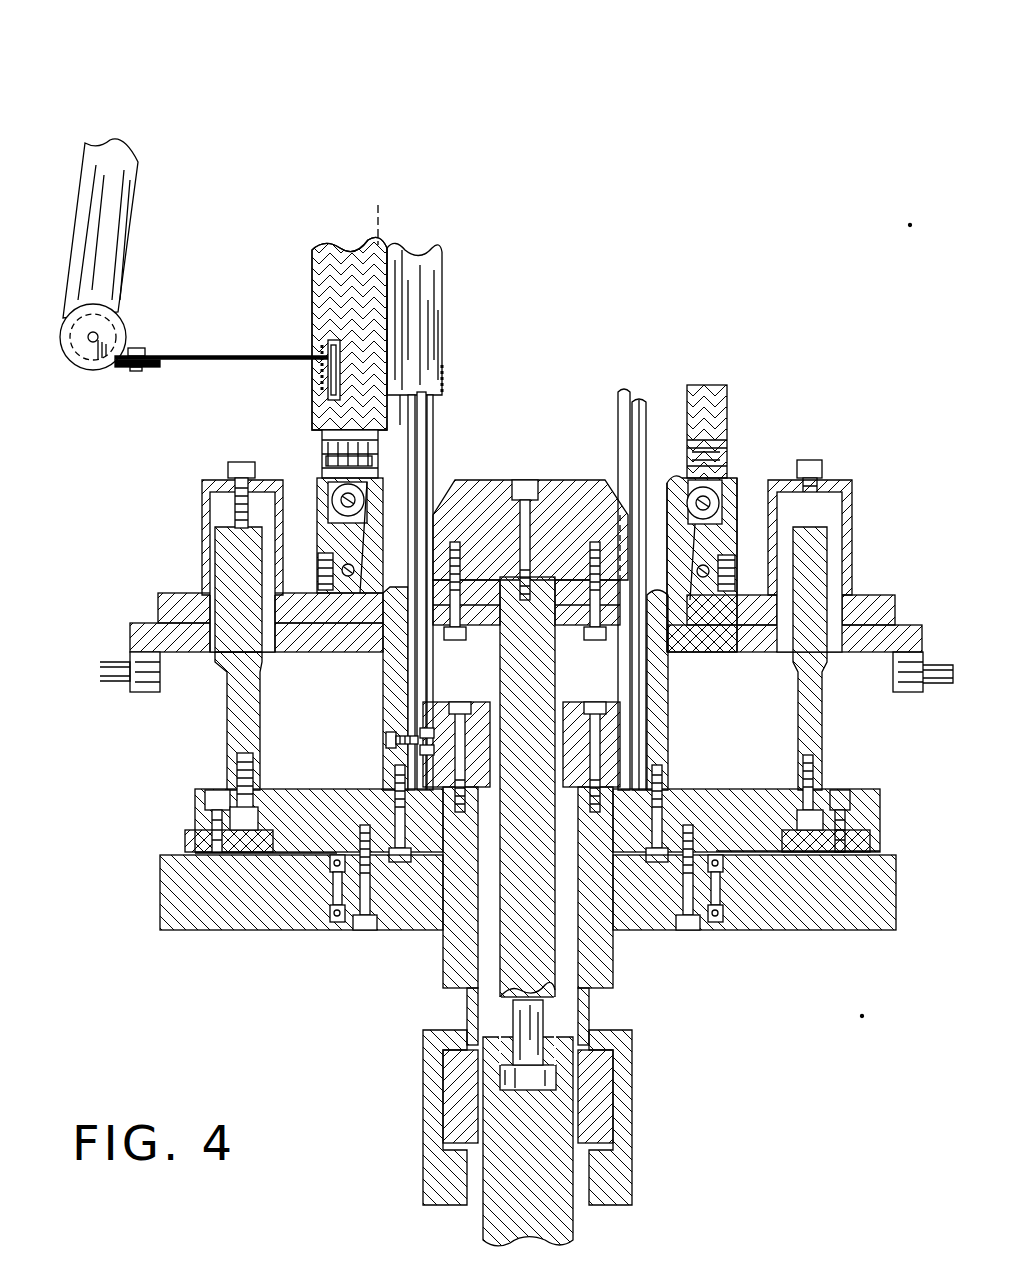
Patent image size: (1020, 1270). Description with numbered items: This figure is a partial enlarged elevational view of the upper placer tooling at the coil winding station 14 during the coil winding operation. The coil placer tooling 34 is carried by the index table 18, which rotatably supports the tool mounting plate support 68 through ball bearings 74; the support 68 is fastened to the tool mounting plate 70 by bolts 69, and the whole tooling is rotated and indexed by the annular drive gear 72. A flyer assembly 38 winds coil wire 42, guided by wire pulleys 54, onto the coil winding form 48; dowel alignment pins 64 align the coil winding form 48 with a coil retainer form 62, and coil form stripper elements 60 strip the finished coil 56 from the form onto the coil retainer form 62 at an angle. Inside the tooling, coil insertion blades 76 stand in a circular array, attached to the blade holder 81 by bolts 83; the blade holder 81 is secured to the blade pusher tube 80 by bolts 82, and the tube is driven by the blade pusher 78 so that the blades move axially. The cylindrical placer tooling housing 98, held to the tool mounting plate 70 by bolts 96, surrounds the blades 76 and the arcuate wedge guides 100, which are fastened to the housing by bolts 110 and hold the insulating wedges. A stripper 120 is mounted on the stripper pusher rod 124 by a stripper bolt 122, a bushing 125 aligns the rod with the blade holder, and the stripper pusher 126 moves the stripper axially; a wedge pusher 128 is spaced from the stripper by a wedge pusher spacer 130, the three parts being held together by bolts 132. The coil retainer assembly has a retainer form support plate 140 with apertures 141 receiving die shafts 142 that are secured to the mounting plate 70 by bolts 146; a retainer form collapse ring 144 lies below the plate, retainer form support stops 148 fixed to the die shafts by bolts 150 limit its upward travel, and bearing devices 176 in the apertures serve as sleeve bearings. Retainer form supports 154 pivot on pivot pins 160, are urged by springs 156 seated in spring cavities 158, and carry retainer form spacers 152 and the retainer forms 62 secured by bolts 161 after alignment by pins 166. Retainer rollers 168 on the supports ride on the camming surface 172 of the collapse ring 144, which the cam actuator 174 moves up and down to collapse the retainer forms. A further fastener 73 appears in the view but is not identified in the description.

The coil winding station 14 is at (260, 128).
The index table 18 is at (168, 893).
The coil placer tooling 34 is at (594, 350).
The flyer assembly 38 is at (128, 258).
The coil wire 42 is at (182, 356).
The coil winding form 48 is at (435, 305).
The wire pulleys 54 is at (78, 365).
The coil 56 is at (445, 378).
The coil form stripper 60 is at (398, 262).
The coil retainer form 62 is at (330, 410).
The dowel alignment pins 64 is at (328, 345).
The tool mounting plate support 68 is at (754, 892).
The bolts 69 is at (365, 930).
The tool mounting plate 70 is at (285, 805).
The annular drive gear 72 is at (185, 840).
The bolt 73 is at (217, 795).
The ball bearings 74 is at (337, 925).
The coil insertion blades 76 is at (433, 450).
The blade pusher 78 is at (628, 1085).
The blade pusher tube 80 is at (603, 968).
The blade holder 81 is at (610, 740).
The bolts 82 is at (605, 702).
The bolts 83 is at (438, 708).
The bolts 96 is at (665, 790).
The placer tooling housing 98 is at (396, 692).
The wedge guides 100 is at (646, 405).
The bolts 110 is at (386, 742).
The stripper 120 is at (478, 482).
The stripper bolt 122 is at (528, 485).
The stripper pusher rod 124 is at (527, 932).
The bushing 125 is at (556, 772).
The stripper pusher 126 is at (555, 1212).
The wedge pusher 128 is at (480, 610).
The wedge pusher spacer 130 is at (463, 590).
The bolts 132 is at (592, 558).
The retainer form support plate 140 is at (175, 595).
The apertures 141 is at (208, 610).
The die shafts 142 is at (230, 725).
The retainer form collapse ring 144 is at (145, 628).
The bolts 146 is at (258, 820).
The retainer form support stops 148 is at (205, 490).
The bolts 150 is at (238, 465).
The retainer form spacers 152 is at (710, 412).
The retainer form supports 154 is at (348, 580).
The springs 156 is at (740, 580).
The spring cavities 158 is at (740, 545).
The pivot pins 160 is at (350, 578).
The bolts 161 is at (322, 458).
The pins 166 is at (322, 440).
The retainer rollers 168 is at (352, 492).
The camming surface 172 is at (680, 490).
The cam actuator 174 is at (135, 660).
The bearing devices 176 is at (222, 540).